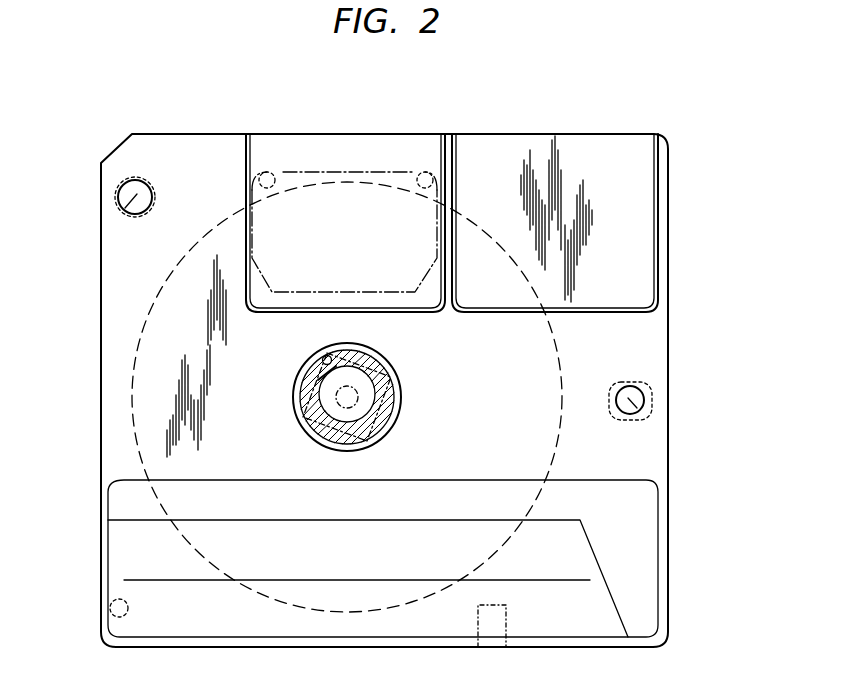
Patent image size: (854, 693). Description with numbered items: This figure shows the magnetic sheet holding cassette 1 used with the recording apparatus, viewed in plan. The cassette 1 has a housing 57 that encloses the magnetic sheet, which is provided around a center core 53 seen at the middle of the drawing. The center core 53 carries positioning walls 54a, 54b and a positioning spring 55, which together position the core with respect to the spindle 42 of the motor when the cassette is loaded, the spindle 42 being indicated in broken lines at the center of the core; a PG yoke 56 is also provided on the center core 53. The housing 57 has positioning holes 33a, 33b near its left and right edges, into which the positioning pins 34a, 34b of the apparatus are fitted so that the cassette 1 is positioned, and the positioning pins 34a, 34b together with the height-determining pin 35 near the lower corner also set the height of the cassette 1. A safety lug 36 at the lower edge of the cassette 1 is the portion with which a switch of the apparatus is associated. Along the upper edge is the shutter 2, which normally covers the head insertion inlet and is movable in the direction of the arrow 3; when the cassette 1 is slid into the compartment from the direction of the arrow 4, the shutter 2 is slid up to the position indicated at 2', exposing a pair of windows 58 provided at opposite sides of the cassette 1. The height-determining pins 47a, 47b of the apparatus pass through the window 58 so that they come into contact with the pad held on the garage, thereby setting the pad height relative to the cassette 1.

The cassette 1 is at (652, 350).
The shutter 2 is at (345, 202).
The shutter open position 2' is at (577, 223).
The arrow indicating shutter movement direction 3 is at (495, 113).
The arrow indicating cassette insertion direction 4 is at (86, 470).
The positioning hole 33a is at (652, 386).
The positioning hole 33b is at (118, 188).
The positioning pin 34a is at (637, 408).
The positioning pin 34b is at (125, 208).
The height-determining pin 35 is at (120, 615).
The safety lug 36 is at (490, 632).
The spindle 42 is at (318, 405).
The height-determining pin 47a is at (424, 172).
The height-determining pin 47b is at (268, 172).
The center core 53 is at (318, 437).
The positioning wall 54a is at (336, 430).
The positioning wall 54b is at (380, 422).
The positioning spring 55 is at (316, 380).
The PG yoke 56 is at (323, 360).
The housing 57 is at (656, 468).
The window 58 is at (246, 189).